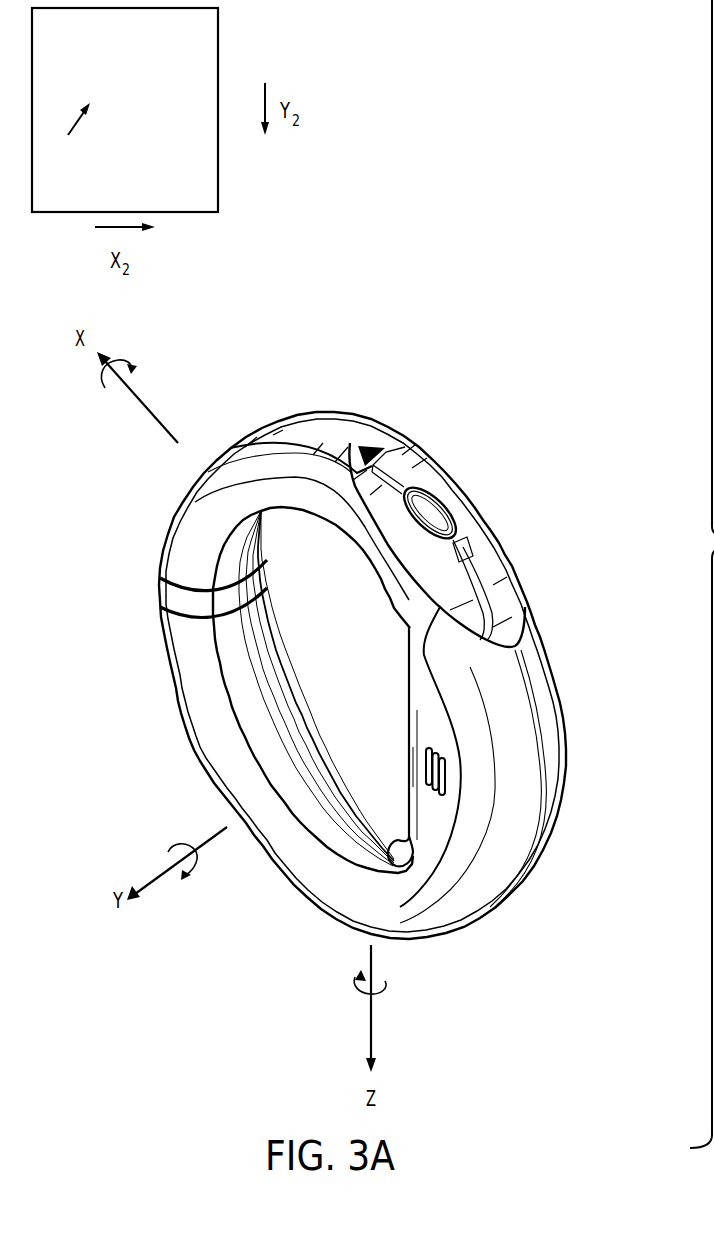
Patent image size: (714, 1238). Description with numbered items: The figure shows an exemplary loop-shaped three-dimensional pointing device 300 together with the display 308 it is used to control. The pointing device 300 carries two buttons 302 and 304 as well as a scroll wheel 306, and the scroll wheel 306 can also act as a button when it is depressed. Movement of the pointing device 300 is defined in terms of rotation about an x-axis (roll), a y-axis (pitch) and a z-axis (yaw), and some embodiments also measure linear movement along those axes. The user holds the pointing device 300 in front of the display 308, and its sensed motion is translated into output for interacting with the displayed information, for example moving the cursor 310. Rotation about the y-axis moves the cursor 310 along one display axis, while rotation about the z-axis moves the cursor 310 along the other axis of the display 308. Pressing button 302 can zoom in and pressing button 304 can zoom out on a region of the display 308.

The 3D pointing device 300 is at (588, 372).
The button 302 is at (406, 547).
The button 304 is at (463, 500).
The scroll wheel 306 is at (444, 482).
The display 308 is at (218, 43).
The cursor 310 is at (76, 121).